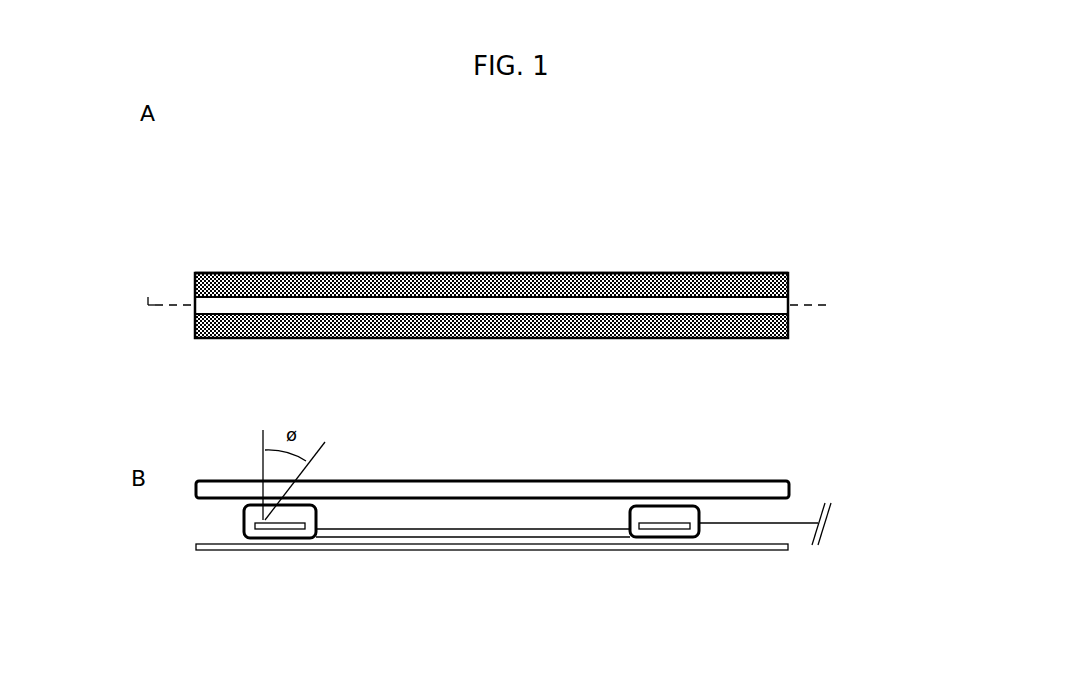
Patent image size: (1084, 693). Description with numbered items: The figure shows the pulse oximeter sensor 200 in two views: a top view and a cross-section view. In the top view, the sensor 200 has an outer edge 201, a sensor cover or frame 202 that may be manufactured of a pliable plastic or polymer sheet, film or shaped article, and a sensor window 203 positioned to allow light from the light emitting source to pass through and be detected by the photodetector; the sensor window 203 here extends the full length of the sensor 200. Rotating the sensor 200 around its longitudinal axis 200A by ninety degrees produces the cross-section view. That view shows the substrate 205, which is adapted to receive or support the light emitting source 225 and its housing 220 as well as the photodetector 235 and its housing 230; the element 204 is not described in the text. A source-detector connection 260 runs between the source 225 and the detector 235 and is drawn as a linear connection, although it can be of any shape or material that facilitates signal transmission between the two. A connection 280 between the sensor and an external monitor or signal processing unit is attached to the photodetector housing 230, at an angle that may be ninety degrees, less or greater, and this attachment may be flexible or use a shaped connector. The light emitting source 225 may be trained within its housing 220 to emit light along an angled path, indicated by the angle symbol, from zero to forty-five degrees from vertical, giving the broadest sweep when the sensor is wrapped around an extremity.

The pulse oximeter sensor 200 is at (197, 231).
The longitudinal axis 200A is at (148, 266).
The outer edge 201 is at (403, 272).
The sensor cover or frame 202 is at (553, 283).
The sensor window 203 is at (710, 305).
The upper plate 204 is at (728, 490).
The substrate 205 is at (757, 547).
The light emitting source housing 220 is at (305, 512).
The light emitting source 225 is at (285, 526).
The photodetector housing 230 is at (648, 515).
The photodetector 235 is at (670, 525).
The source-detector connection 260 is at (522, 532).
The connection 280 is at (803, 520).